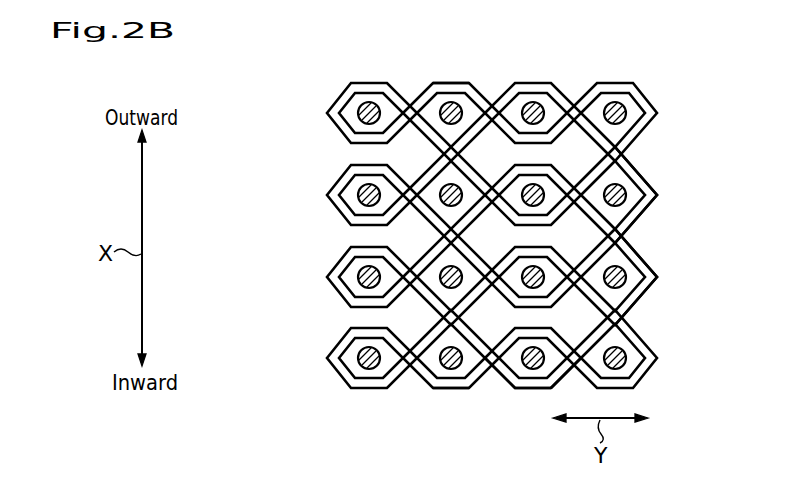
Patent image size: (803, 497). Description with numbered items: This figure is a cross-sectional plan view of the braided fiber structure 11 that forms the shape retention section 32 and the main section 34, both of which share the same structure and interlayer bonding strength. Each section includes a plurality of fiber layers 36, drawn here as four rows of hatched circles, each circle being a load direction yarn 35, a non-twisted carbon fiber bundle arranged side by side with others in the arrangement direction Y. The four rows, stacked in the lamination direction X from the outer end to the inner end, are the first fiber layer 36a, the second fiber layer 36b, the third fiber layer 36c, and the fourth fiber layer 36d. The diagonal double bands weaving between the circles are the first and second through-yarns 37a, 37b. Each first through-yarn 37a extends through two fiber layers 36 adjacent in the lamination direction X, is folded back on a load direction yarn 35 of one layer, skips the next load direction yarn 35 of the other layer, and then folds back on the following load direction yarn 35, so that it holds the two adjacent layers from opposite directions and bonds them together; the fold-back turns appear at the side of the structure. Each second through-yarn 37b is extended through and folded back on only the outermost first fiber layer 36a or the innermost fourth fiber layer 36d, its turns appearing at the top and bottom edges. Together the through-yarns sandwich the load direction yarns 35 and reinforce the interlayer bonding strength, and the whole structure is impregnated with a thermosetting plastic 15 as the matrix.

The braided structure 11 is at (640, 49).
The thermosetting plastic 15 is at (508, 163).
The shape retention section 32 is at (516, 419).
The main section 34 is at (537, 423).
The load direction yarn 35 is at (443, 106).
The fiber layer 36 is at (430, 235).
The first fiber layer 36a is at (279, 118).
The second fiber layer 36b is at (279, 200).
The third fiber layer 36c is at (279, 282).
The fourth fiber layer 36d is at (279, 363).
The first through-yarn 37a is at (648, 133).
The second through-yarn 37b is at (461, 82).